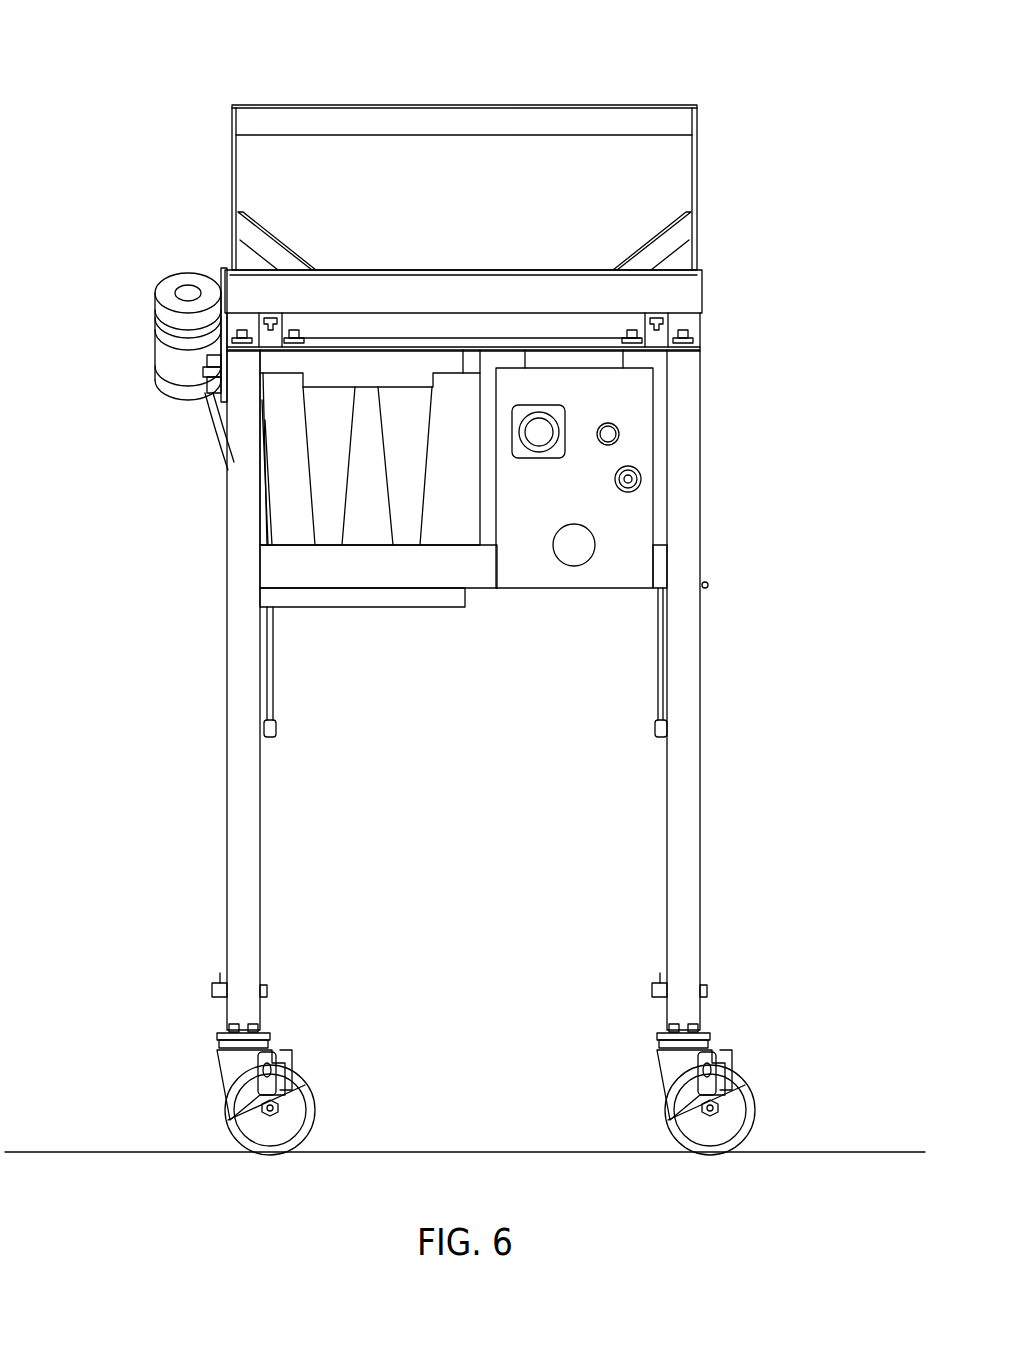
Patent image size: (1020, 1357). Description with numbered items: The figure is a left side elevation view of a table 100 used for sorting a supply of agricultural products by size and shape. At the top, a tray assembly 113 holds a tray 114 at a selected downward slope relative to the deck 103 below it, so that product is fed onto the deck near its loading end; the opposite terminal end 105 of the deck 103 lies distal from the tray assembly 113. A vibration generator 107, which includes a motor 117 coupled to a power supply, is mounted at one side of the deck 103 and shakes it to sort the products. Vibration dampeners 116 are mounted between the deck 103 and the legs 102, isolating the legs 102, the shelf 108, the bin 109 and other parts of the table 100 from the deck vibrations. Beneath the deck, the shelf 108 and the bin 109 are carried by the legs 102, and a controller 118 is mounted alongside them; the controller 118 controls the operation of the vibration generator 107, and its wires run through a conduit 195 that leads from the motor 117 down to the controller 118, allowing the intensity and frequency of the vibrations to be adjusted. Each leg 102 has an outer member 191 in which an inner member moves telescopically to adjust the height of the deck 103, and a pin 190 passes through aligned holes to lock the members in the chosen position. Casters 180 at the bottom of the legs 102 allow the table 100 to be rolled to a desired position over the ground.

The table 100 is at (257, 75).
The legs 102 is at (212, 579).
The deck 103 is at (712, 292).
The terminal end 105 is at (507, 284).
The vibration generator 107 is at (150, 317).
The shelf 108 is at (421, 573).
The bin 109 is at (333, 532).
The tray assembly 113 is at (712, 168).
The tray 114 is at (302, 188).
The vibration dampeners 116 is at (668, 346).
The motor 117 is at (178, 290).
The controller 118 is at (540, 573).
The casters 180 is at (303, 1127).
The pin 190 is at (212, 990).
The outer member 191 is at (231, 690).
The conduit 195 is at (208, 426).